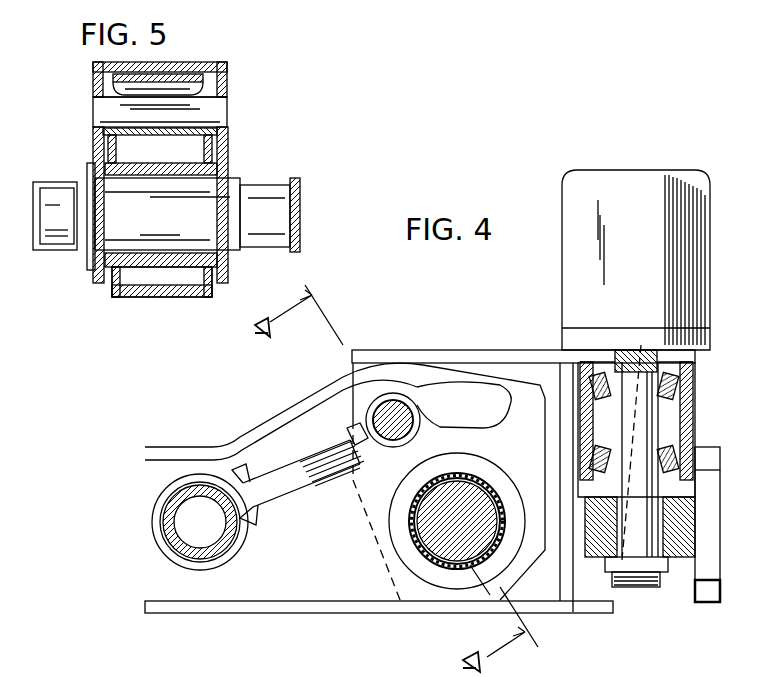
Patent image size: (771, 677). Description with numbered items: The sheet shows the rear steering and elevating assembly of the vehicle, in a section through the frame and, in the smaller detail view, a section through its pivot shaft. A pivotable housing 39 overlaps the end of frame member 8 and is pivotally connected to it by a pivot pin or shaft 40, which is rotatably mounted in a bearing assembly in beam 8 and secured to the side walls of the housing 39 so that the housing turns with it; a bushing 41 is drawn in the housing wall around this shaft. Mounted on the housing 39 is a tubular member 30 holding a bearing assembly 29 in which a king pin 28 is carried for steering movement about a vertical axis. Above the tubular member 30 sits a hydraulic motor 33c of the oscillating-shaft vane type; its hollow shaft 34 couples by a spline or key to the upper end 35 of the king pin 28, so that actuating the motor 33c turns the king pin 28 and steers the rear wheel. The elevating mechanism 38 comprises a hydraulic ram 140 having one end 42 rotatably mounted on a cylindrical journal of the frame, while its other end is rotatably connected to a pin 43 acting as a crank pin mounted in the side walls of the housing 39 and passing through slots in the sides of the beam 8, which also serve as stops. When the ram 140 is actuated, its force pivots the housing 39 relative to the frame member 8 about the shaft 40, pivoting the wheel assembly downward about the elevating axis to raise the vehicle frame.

In FIG. 5, the frame member 8 is at (222, 82).
In FIG. 4, the frame member 8 is at (275, 422).
In FIG. 4, the king pin 28 is at (708, 455).
In FIG. 4, the bearing assembly 29 is at (683, 390).
In FIG. 4, the tubular member 30 is at (693, 420).
In FIG. 4, the hydraulic motor 33c is at (633, 180).
In FIG. 4, the hollow shaft 34 is at (690, 365).
In FIG. 4, the upper end of the king pin 35 is at (620, 350).
In FIG. 4, the elevating mechanism 38 is at (445, 312).
In FIG. 5, the housing 39 is at (200, 62).
In FIG. 4, the housing 39 is at (533, 348).
In FIG. 5, the pivot pin or shaft 40 is at (250, 195).
In FIG. 5, the bushing 41 is at (205, 72).
In FIG. 4, the bushing 41 is at (366, 400).
In FIG. 4, the end of the hydraulic ram 42 is at (160, 505).
In FIG. 5, the pin 43 is at (105, 115).
In FIG. 4, the pin 43 is at (405, 447).
In FIG. 4, the hydraulic ram 140 is at (315, 480).